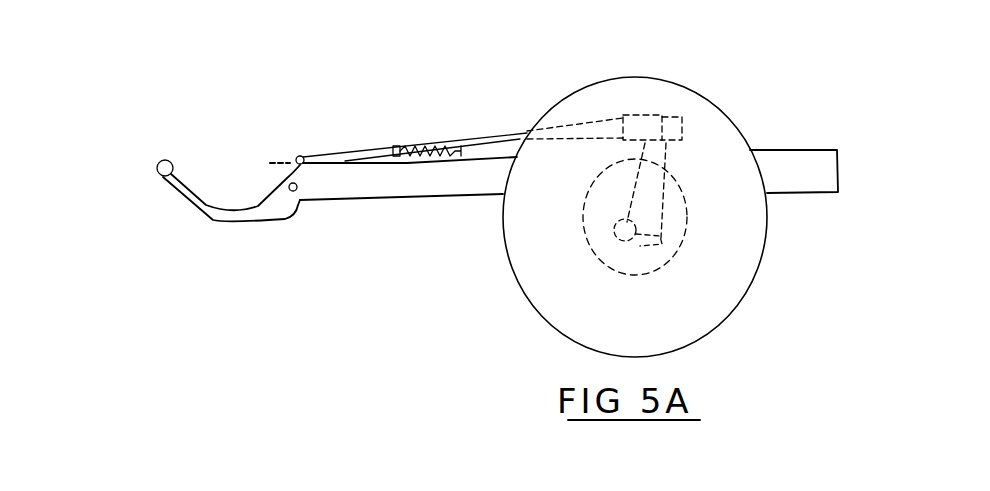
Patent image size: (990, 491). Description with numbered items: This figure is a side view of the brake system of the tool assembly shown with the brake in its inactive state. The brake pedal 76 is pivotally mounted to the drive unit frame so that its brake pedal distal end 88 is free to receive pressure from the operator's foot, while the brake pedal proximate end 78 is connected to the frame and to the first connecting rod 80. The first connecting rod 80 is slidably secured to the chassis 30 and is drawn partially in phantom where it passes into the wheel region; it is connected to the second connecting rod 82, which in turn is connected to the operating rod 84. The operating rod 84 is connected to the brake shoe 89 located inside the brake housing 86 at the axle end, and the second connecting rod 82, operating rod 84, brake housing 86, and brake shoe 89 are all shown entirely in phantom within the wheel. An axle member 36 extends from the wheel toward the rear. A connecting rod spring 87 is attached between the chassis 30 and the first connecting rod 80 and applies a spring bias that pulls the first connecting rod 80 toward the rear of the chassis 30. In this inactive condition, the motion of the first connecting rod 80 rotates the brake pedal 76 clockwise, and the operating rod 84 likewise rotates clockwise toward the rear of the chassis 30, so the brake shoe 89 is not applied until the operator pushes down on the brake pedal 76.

The chassis 30 is at (470, 178).
The axle 36 is at (728, 187).
The brake pedal 76 is at (258, 231).
The brake pedal proximate end 78 is at (307, 153).
The first connecting rod 80 is at (483, 136).
The second connecting rod 82 is at (667, 127).
The operating rod 84 is at (665, 166).
The brake housing 86 is at (688, 235).
The connecting rod spring 87 is at (423, 145).
The brake pedal distal end 88 is at (158, 175).
The brake shoe 89 is at (660, 263).